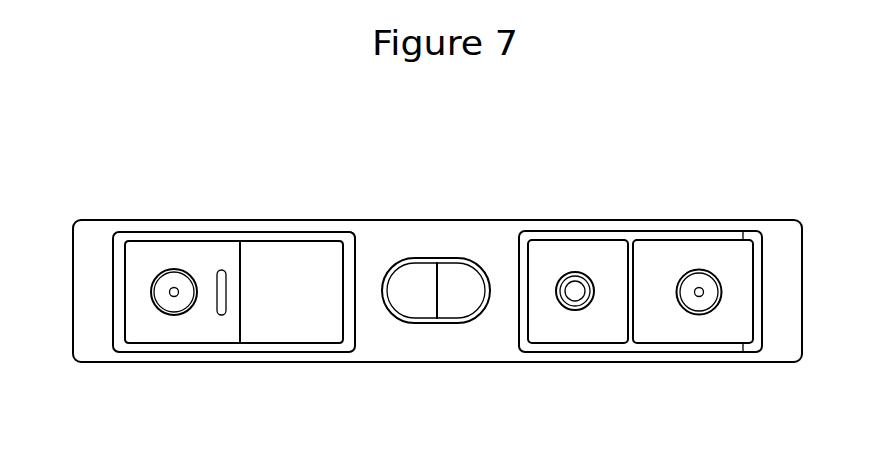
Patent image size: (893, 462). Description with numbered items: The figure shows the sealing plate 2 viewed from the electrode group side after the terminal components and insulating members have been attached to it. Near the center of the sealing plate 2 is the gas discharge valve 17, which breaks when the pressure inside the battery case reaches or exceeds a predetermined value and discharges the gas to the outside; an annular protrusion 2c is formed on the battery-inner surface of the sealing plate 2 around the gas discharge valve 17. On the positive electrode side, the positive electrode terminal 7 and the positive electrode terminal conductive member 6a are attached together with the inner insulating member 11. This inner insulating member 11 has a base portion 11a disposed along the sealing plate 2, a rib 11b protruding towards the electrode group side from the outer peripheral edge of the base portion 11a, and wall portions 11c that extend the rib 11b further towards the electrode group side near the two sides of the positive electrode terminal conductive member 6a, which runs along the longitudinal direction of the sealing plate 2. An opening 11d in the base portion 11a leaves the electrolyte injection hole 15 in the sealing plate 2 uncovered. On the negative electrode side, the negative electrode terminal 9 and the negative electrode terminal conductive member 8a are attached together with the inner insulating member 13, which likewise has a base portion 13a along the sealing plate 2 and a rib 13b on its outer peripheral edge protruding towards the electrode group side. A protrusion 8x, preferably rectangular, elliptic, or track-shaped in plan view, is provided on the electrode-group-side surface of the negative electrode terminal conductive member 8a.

The sealing plate 2 is at (432, 245).
The annular protrusion 2c is at (457, 263).
The positive electrode terminal conductive member 6a is at (723, 267).
The positive electrode terminal 7 is at (710, 293).
The negative electrode terminal conductive member 8a is at (150, 262).
The protrusion 8x is at (222, 270).
The negative electrode terminal 9 is at (160, 293).
The inner insulating member 11 is at (640, 231).
The base portion 11a is at (590, 257).
The rib 11b is at (560, 238).
The wall portions 11c is at (688, 237).
The opening 11d is at (556, 291).
The inner insulating member 13 is at (182, 232).
The base portion 13a is at (288, 257).
The rib 13b is at (348, 233).
The electrolyte injection hole 15 is at (574, 308).
The gas discharge valve 17 is at (442, 284).